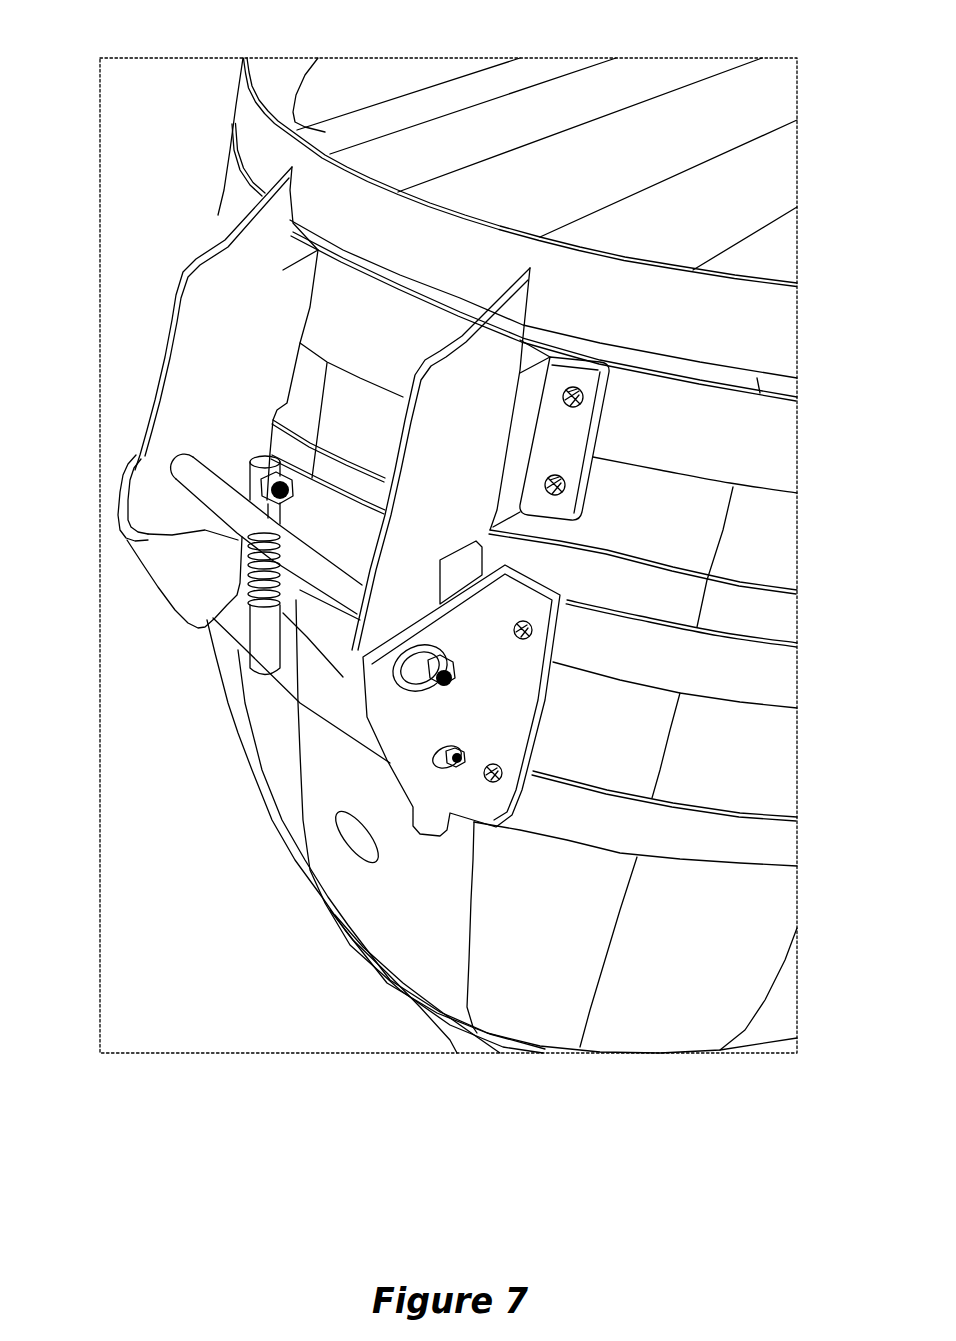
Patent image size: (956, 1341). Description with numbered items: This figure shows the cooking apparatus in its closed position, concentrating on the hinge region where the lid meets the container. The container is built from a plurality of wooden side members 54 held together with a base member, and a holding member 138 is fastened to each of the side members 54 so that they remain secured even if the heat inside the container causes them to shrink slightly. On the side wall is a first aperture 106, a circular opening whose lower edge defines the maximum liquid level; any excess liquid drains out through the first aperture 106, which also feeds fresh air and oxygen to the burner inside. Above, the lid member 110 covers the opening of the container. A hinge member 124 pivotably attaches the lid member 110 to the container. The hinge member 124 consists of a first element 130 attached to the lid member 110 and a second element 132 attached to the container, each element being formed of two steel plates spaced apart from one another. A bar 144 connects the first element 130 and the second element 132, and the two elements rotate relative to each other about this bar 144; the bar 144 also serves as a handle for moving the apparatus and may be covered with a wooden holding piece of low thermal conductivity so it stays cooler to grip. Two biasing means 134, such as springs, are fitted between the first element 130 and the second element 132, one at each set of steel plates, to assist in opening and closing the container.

The lid member 110 is at (649, 75).
The wooden side members 54 is at (363, 897).
The first aperture 106 is at (347, 827).
The hinge member 124 is at (448, 501).
The first element 130 is at (213, 337).
The second element 132 is at (145, 547).
The biasing means 134 is at (245, 567).
The holding member 138 is at (683, 667).
The bar 144 is at (272, 538).